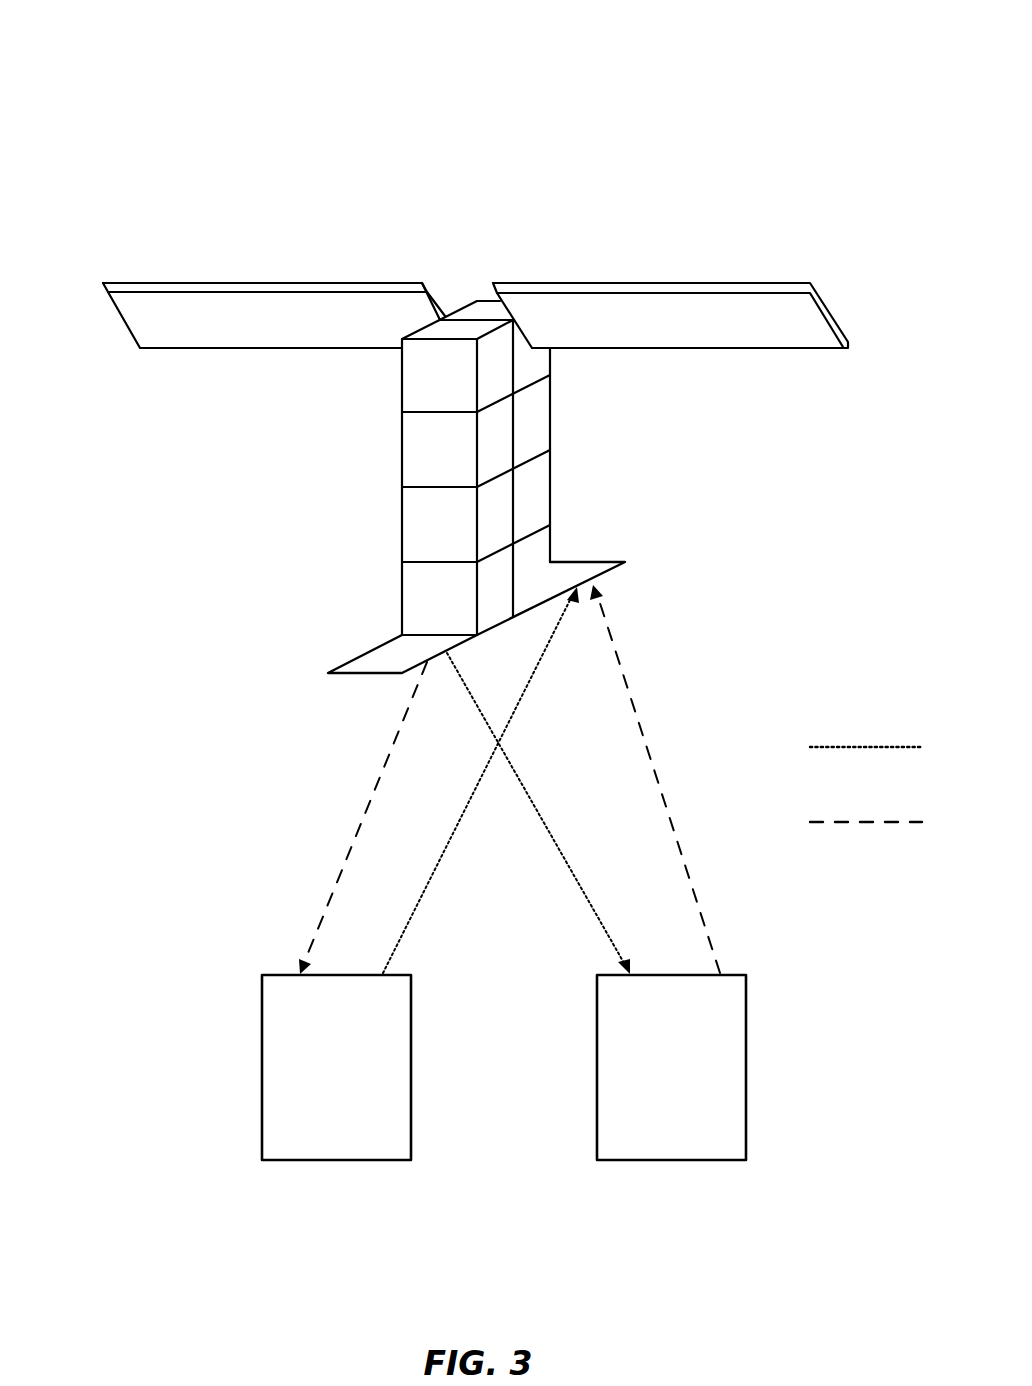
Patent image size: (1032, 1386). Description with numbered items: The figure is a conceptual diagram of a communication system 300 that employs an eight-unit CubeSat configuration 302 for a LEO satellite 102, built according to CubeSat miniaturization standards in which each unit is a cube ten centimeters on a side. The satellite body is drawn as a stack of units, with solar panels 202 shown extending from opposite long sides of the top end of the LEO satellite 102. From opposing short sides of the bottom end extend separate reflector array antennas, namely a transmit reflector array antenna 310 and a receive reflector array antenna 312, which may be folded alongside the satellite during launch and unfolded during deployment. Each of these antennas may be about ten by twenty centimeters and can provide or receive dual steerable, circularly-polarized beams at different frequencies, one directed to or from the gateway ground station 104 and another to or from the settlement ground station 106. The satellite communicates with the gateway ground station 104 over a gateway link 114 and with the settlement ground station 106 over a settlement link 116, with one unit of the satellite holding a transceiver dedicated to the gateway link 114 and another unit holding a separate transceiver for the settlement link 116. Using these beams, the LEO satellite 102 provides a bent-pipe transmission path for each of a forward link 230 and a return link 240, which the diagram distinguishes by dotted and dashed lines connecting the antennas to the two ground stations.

The communication system 300 is at (105, 113).
The LEO satellite 102 is at (732, 210).
The solar panels 202 is at (582, 282).
The 8U CubeSat configuration 302 is at (400, 470).
The transmit reflector array antenna 310 is at (385, 640).
The receive reflector array antenna 312 is at (603, 562).
The forward link 230 is at (898, 747).
The return link 240 is at (898, 822).
The gateway link 114 is at (417, 911).
The settlement link 116 is at (597, 916).
The gateway ground station 104 is at (336, 1067).
The settlement ground station 106 is at (671, 1067).